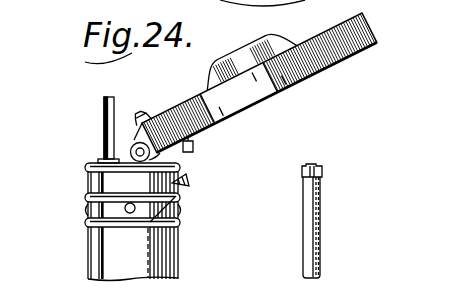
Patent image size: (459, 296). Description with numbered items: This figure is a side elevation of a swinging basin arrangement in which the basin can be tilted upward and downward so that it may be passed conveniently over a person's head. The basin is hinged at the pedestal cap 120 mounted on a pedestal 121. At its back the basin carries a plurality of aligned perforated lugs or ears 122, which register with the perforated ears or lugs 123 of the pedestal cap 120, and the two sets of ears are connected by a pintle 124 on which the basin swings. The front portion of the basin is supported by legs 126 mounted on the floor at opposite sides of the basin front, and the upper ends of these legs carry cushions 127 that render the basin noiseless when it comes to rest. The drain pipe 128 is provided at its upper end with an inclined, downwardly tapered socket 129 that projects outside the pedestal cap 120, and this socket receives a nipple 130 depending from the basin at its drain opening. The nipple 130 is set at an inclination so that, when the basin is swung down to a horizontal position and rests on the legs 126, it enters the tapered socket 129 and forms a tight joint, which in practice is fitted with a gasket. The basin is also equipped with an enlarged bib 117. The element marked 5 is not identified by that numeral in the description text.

The rod 5 is at (110, 96).
The bib 117 is at (244, 54).
The pedestal cap 120 is at (90, 186).
The pedestal 121 is at (102, 263).
The perforated lugs or ears 122 is at (132, 147).
The perforated ears or lugs 123 is at (130, 156).
The pintle 124 is at (163, 157).
The legs 126 is at (320, 233).
The cushions 127 is at (312, 166).
The drain pipe 128 is at (182, 257).
The socket 129 is at (188, 187).
The nipple 130 is at (193, 144).